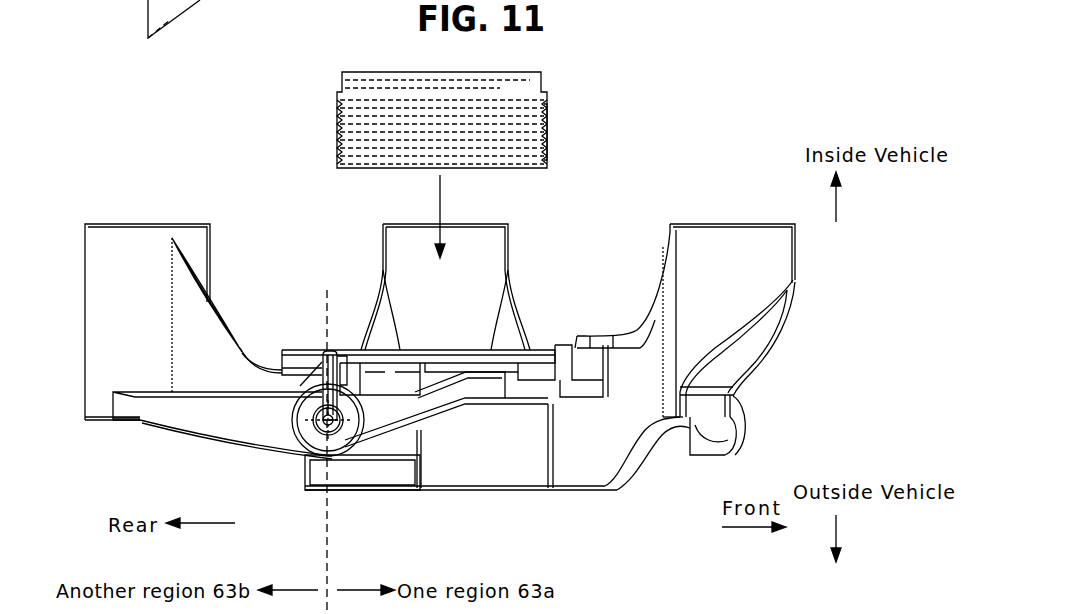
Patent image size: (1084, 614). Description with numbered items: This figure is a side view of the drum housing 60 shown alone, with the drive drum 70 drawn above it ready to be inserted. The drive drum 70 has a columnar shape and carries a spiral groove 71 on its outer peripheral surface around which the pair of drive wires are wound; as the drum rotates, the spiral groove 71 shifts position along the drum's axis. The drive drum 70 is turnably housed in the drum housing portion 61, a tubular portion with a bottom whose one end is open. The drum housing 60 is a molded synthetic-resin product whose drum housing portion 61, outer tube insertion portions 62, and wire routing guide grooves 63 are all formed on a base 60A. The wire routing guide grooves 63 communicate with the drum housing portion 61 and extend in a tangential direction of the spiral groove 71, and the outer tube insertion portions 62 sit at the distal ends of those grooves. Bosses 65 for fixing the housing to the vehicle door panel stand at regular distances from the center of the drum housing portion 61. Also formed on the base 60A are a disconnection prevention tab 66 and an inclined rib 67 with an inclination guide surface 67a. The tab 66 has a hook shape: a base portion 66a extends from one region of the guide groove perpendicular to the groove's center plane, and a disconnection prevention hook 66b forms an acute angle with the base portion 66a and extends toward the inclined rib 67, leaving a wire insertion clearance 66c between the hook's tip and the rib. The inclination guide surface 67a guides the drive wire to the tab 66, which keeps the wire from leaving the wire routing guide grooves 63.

The drum housing 60 is at (440, 314).
The base 60A is at (198, 432).
The drum housing portion 61 is at (418, 352).
The outer tube insertion portions 62 is at (333, 447).
The wire routing guide grooves 63 is at (320, 368).
The bosses 65 is at (125, 235).
The disconnection prevention tab 66 is at (347, 350).
The base portion 66a is at (350, 372).
The disconnection prevention hook 66b is at (292, 340).
The wire insertion clearance 66c is at (300, 386).
The inclined rib 67 is at (188, 313).
The inclination guide surface 67a is at (243, 345).
The drive drum 70 is at (502, 74).
The spiral groove 71 is at (548, 122).